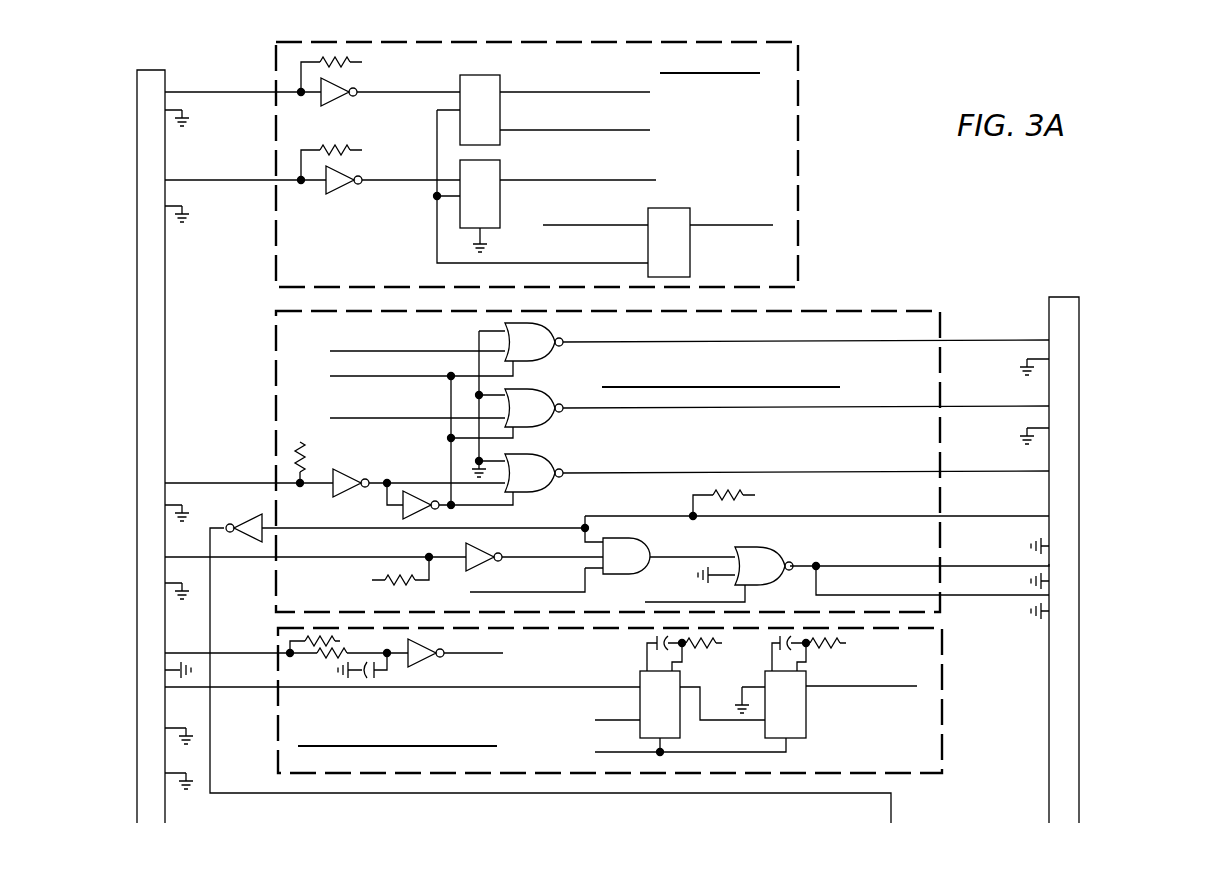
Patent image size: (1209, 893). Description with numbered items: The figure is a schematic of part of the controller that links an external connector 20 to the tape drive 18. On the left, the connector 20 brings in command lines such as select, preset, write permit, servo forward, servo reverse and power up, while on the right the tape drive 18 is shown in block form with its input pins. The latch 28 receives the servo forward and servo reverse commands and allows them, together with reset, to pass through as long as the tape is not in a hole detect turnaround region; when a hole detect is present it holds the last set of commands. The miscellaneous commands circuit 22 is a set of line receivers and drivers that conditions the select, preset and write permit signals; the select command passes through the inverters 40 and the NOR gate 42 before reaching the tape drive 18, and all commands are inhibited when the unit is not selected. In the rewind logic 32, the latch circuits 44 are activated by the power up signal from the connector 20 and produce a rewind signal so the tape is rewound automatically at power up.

The tape drive 18 is at (1072, 318).
The connector 20 is at (160, 76).
The miscellaneous commands circuit 22 is at (276, 336).
The latch 28 is at (276, 152).
The rewind logic 32 is at (278, 712).
The inverters 40 is at (338, 490).
The NOR gate 42 is at (548, 472).
The latch circuits 44 is at (640, 676).